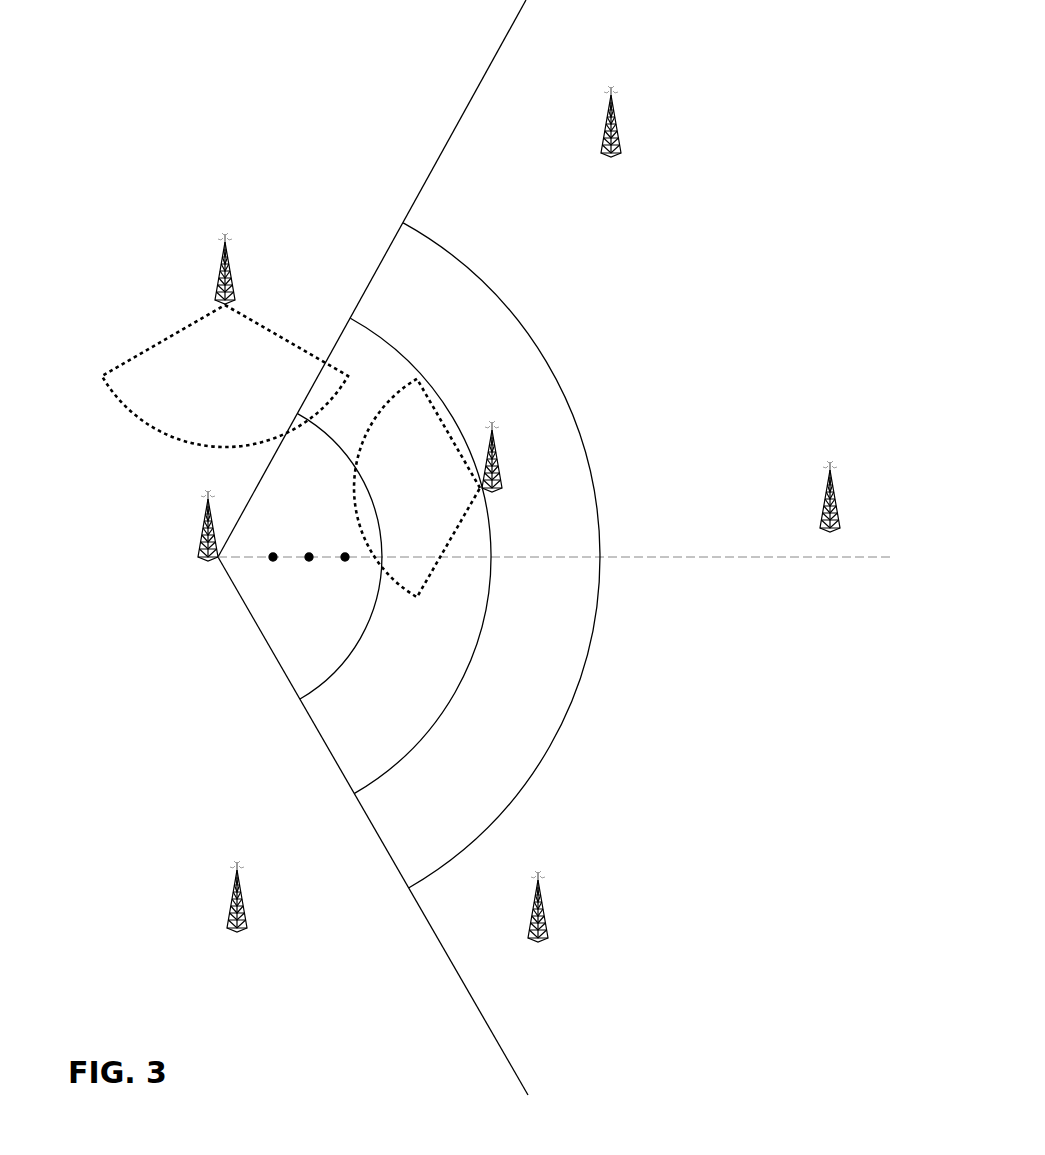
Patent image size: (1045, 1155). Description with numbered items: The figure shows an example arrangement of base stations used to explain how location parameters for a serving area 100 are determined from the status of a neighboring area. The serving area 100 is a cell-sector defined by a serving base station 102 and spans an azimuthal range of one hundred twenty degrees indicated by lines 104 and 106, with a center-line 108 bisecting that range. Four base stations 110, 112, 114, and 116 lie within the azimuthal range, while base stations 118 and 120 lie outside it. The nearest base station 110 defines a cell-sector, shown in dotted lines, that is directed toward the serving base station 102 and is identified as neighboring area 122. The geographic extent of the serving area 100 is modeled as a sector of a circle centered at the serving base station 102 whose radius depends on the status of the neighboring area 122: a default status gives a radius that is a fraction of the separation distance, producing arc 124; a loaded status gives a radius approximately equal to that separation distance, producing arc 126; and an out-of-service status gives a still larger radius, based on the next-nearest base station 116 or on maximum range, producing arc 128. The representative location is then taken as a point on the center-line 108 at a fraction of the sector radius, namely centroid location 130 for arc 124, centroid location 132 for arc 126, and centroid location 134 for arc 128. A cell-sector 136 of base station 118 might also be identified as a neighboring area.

The serving area 100 is at (328, 517).
The serving base station 102 is at (198, 557).
The line 104 is at (498, 50).
The line 106 is at (475, 1003).
The center-line 108 is at (728, 558).
The nearest base station 110 is at (505, 488).
The base station 112 is at (622, 153).
The base station 114 is at (840, 525).
The base station 116 is at (548, 935).
The base station 118 is at (216, 298).
The base station 120 is at (228, 922).
The neighboring area 122 is at (432, 474).
The arc 124 is at (363, 632).
The arc 126 is at (483, 630).
The arc 128 is at (594, 630).
The centroid location 130 is at (273, 561).
The centroid location 132 is at (309, 561).
The centroid location 134 is at (345, 561).
The cell-sector 136 is at (248, 387).